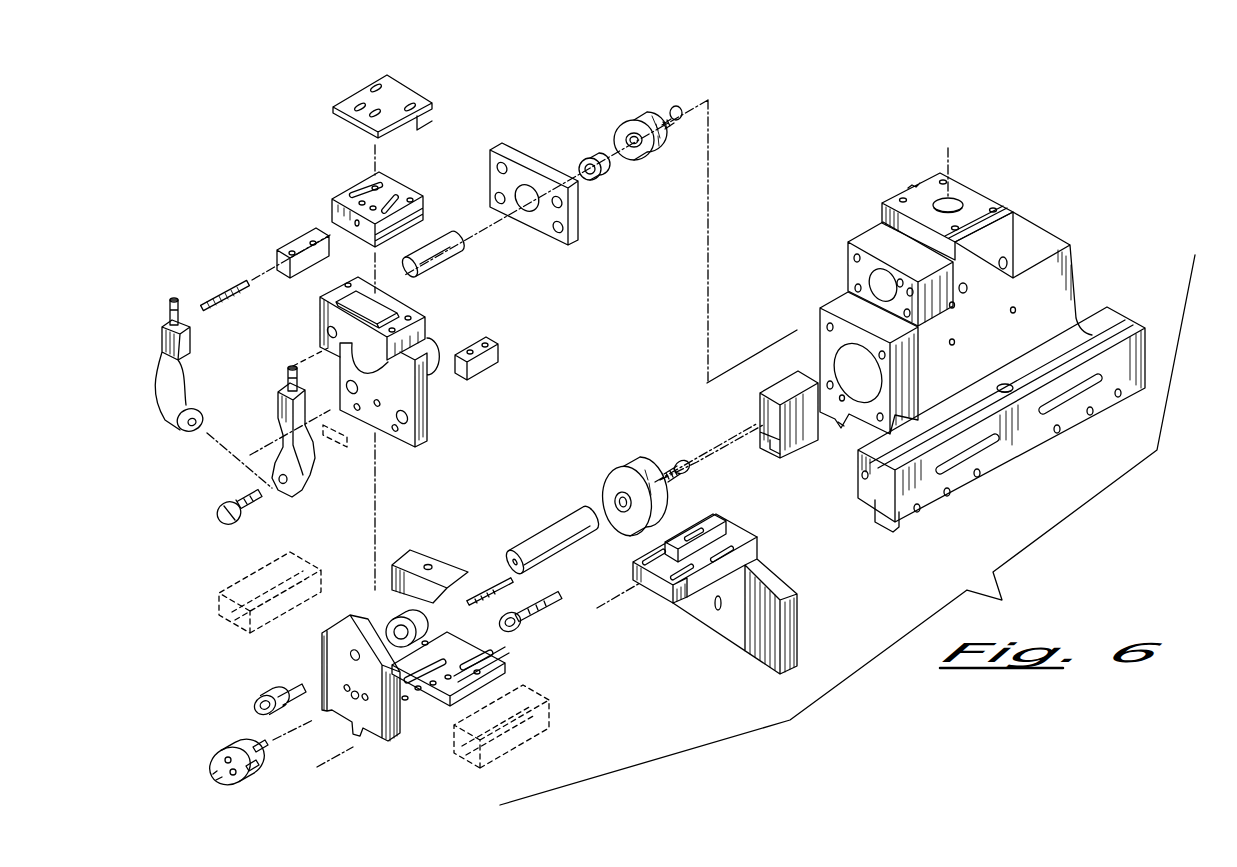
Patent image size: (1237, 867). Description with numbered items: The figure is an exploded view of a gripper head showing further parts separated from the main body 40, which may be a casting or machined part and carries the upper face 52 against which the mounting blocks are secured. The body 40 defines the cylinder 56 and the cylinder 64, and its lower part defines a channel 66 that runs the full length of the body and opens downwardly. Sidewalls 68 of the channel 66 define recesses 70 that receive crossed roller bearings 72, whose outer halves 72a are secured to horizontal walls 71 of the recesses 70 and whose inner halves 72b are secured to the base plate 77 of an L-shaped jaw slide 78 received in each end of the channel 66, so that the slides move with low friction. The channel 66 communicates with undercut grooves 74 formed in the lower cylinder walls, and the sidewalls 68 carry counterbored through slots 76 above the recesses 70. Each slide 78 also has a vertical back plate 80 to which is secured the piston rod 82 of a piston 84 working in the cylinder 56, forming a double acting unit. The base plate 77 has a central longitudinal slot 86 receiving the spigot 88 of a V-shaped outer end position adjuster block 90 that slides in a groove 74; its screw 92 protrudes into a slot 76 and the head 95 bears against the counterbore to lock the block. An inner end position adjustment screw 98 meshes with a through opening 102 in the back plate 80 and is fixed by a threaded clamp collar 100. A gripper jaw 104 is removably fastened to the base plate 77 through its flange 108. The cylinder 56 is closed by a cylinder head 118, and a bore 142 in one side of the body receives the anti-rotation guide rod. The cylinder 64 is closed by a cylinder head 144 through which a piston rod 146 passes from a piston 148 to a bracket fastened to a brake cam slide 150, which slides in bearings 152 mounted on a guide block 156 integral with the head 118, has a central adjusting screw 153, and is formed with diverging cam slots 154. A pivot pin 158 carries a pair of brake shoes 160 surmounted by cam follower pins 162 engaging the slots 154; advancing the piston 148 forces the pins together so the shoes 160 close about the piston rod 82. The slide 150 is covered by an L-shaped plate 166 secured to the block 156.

The main body 40 is at (926, 348).
The upper face 52 is at (953, 202).
The cylinder 56 is at (853, 370).
The cylinder 64 is at (877, 280).
The channel 66 is at (974, 434).
The sidewalls 68 is at (773, 425).
The recesses 70 is at (865, 502).
The horizontal walls 71 is at (893, 520).
The crossed roller bearings 72 is at (553, 715).
The outer halves of the bearings 72a is at (525, 743).
The inner halves of the bearings 72b is at (460, 758).
The undercut grooves 74 is at (843, 426).
The through slots 76 is at (1077, 388).
The base plate 77 is at (502, 677).
The jaw slide 78 is at (355, 743).
The back plate 80 is at (372, 707).
The piston rod 82 is at (565, 528).
The piston 84 is at (627, 470).
The central longitudinal slot 86 is at (418, 677).
The spigot 88 is at (433, 600).
The jaw slide outer end position adjuster block 90 is at (428, 550).
The screw 92 is at (490, 604).
The head of the screw 95 is at (522, 620).
The jaw slide inner end position adjustment screw 98 is at (257, 743).
The threaded clamp collar 100 is at (227, 748).
The through opening 102 is at (353, 699).
The gripper jaw 104 is at (763, 622).
The flange 108 is at (657, 590).
The cylinder head 118 is at (425, 435).
The bore 142 is at (1007, 384).
The cylinder head 144 is at (525, 160).
The piston rod 146 is at (448, 255).
The piston 148 is at (632, 132).
The brake cam slide 150 is at (413, 205).
The bearings 152 is at (503, 358).
The central adjusting screw 153 is at (228, 287).
The cam slots 154 is at (362, 190).
The guide block 156 is at (427, 325).
The pivot pin 158 is at (223, 503).
The brake shoes 160 is at (307, 463).
The cam follower pins 162 is at (287, 372).
The L-shaped plate 166 is at (412, 90).